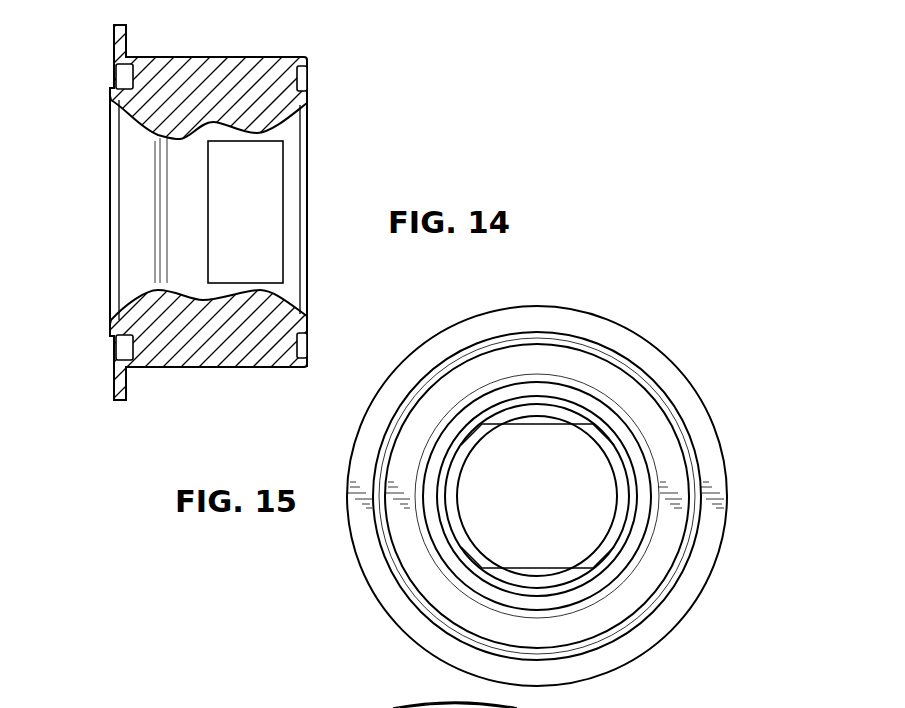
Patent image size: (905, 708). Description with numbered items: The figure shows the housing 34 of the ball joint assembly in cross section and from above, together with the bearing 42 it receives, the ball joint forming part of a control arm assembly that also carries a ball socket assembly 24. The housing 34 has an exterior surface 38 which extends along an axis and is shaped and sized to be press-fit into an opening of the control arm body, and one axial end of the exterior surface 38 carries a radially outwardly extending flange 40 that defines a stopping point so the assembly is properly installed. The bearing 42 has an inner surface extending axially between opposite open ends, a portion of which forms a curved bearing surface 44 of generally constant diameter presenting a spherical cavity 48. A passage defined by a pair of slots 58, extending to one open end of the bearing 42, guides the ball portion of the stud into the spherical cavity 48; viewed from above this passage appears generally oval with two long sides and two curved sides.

In FIG. 15, the ball socket assembly 24 is at (565, 496).
In FIG. 14, the housing 34 is at (234, 212).
In FIG. 14, the exterior surface 38 is at (197, 368).
In FIG. 14, the flange 40 is at (115, 383).
In FIG. 15, the flange 40 is at (710, 538).
In FIG. 14, the bearing 42 is at (160, 320).
In FIG. 14, the curved bearing surface 44 is at (178, 139).
In FIG. 14, the spherical cavity 48 is at (187, 250).
In FIG. 14, the slots 58 is at (270, 152).
In FIG. 15, the slots 58 is at (622, 502).